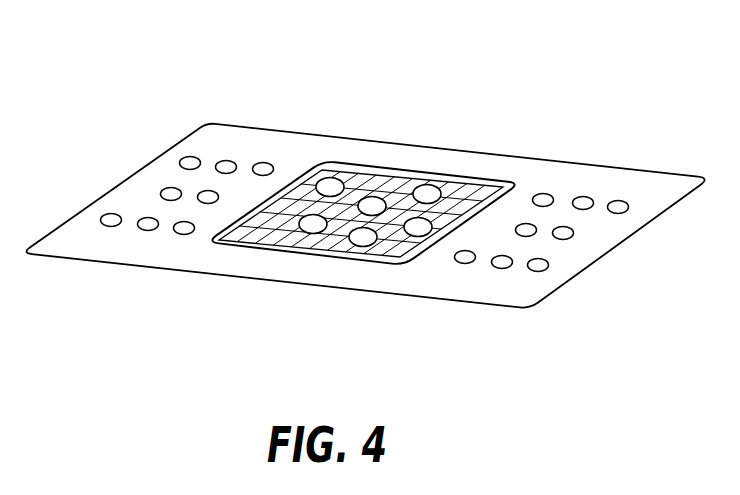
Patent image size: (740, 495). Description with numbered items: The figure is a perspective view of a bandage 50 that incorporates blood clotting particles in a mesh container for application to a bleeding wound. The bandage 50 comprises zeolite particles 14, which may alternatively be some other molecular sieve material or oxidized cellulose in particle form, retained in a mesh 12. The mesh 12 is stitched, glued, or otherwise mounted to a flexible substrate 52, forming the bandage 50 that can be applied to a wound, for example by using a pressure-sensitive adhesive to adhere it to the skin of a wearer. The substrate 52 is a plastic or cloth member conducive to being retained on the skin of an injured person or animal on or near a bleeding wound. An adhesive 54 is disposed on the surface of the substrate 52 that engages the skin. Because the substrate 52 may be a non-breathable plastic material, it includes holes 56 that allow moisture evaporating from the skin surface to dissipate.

The bandage 50 is at (575, 98).
The flexible substrate 52 is at (150, 270).
The adhesive 54 is at (148, 190).
The holes 56 is at (264, 166).
The mesh 12 is at (327, 243).
The zeolite particles 14 is at (427, 192).